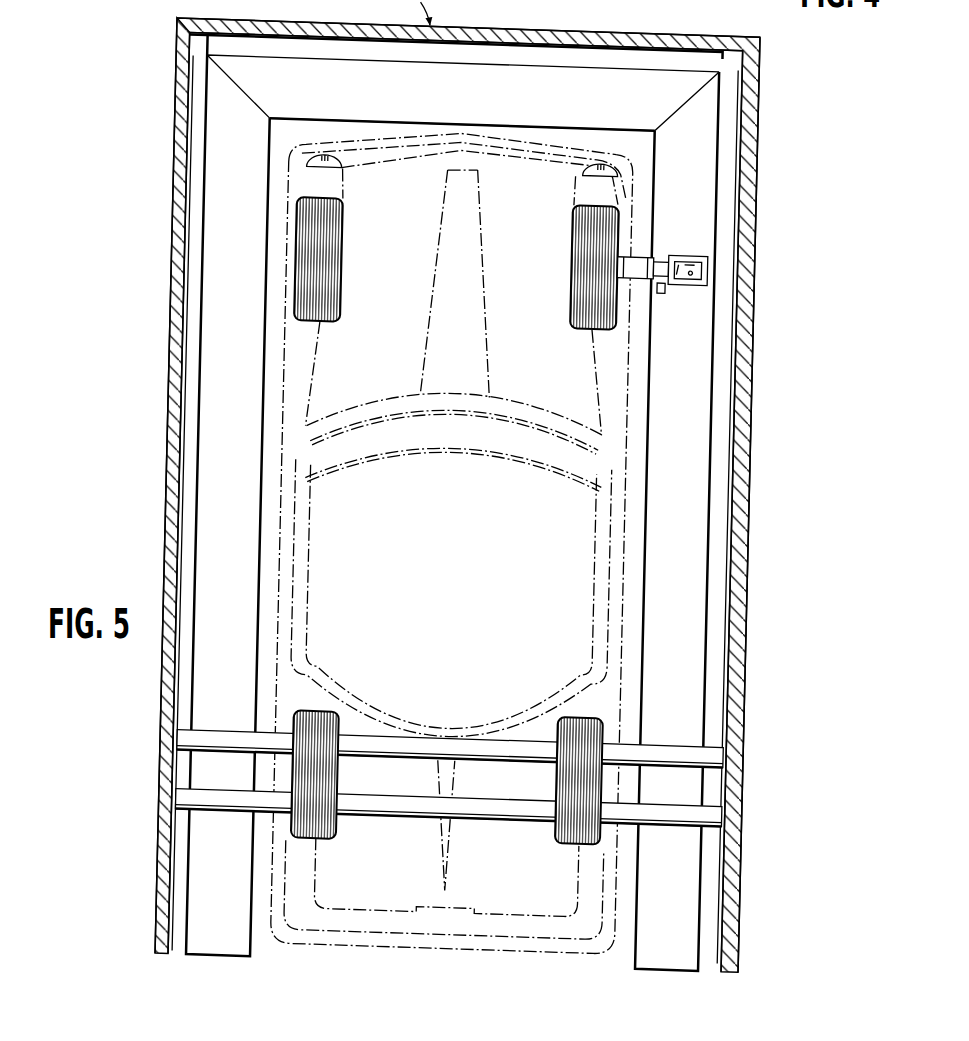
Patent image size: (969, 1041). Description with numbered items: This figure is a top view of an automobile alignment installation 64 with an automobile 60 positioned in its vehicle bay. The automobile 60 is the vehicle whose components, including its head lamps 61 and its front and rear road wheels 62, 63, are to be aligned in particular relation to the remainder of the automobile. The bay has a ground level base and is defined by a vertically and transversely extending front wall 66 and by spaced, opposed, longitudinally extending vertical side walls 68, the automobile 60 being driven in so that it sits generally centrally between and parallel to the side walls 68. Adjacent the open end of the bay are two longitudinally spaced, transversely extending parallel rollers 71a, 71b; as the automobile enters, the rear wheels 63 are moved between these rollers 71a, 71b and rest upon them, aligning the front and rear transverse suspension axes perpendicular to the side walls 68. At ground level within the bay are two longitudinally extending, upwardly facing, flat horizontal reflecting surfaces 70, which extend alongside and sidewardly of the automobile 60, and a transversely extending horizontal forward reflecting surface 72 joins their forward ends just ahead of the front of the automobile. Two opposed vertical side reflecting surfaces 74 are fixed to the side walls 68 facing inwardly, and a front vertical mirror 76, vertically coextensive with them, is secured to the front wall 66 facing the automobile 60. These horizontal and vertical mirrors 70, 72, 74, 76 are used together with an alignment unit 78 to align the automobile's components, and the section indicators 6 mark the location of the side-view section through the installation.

The section line 6- 6 is at (558, 253).
The automobile 60 is at (421, 130).
The head lamps 61 is at (621, 156).
The front road wheels 62 is at (590, 214).
The rear road wheels 63 is at (590, 818).
The alignment installation 64 is at (763, 74).
The front wall 66 is at (505, 27).
The side walls 68 is at (177, 268).
The horizontal reflecting surfaces 70 is at (707, 580).
The roller 71a is at (256, 808).
The roller 71b is at (265, 731).
The forward reflecting surface 72 is at (331, 70).
The side reflecting surfaces 74 is at (194, 470).
The front vertical mirror 76 is at (690, 36).
The alignment unit 78 is at (665, 240).